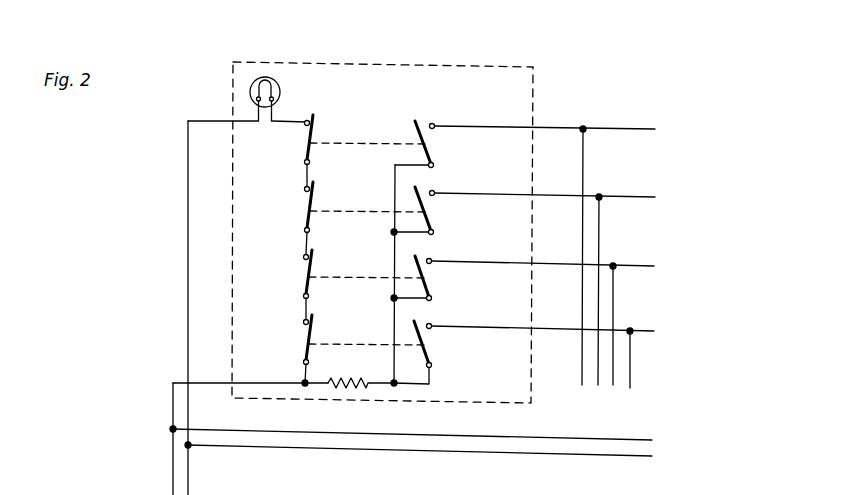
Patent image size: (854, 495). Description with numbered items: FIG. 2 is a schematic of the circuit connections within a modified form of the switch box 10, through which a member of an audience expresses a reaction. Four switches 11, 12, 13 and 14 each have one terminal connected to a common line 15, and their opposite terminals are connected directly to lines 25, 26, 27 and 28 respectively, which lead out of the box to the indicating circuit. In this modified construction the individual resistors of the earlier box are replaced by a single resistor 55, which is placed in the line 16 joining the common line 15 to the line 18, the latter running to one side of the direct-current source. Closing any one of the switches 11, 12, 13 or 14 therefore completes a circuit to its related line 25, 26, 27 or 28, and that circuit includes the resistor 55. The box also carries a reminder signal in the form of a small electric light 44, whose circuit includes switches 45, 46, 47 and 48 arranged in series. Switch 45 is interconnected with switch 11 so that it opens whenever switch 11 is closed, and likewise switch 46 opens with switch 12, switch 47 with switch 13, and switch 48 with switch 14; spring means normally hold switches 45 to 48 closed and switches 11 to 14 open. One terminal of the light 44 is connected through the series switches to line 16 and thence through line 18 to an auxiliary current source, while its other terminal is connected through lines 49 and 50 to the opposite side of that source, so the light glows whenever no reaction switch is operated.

The switch box 10 is at (501, 65).
The switch 11 is at (423, 133).
The switch 12 is at (423, 201).
The switch 13 is at (421, 271).
The switch 14 is at (420, 337).
The common line 15 is at (394, 178).
The line 16 is at (172, 467).
The line 18 is at (433, 436).
The line 25 is at (646, 128).
The line 26 is at (646, 196).
The line 27 is at (646, 265).
The line 28 is at (646, 330).
The electric light 44 is at (273, 77).
The switch 45 is at (306, 133).
The switch 46 is at (306, 198).
The switch 47 is at (305, 268).
The switch 48 is at (305, 335).
The line 49 is at (192, 470).
The line 50 is at (469, 454).
The resistor 55 is at (349, 378).